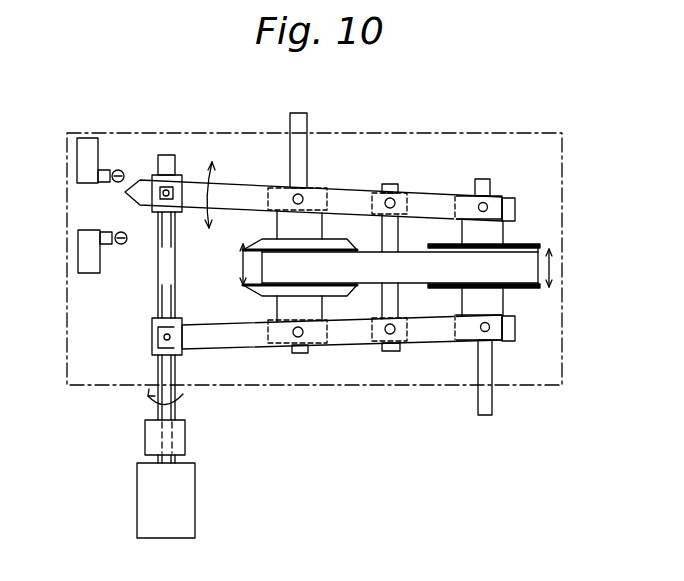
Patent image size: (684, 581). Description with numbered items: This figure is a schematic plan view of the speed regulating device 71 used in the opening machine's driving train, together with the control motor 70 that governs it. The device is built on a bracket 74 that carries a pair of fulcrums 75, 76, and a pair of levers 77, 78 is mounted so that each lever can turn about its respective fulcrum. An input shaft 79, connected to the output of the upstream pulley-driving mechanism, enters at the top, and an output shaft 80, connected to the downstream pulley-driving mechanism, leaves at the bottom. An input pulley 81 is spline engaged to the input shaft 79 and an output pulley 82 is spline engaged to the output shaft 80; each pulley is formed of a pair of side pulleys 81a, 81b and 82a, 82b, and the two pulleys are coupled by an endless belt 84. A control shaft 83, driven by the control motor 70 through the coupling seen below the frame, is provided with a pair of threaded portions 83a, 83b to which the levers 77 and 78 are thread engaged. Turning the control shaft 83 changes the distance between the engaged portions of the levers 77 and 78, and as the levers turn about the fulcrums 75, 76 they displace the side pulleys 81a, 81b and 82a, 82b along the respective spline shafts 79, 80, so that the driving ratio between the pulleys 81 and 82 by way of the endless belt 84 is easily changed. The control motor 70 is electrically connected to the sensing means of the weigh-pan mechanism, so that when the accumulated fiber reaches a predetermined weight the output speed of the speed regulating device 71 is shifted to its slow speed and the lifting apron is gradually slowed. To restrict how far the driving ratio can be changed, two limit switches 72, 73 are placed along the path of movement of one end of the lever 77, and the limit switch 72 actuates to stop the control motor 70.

The control motor 70 is at (176, 499).
The speed regulating device 71 is at (437, 157).
The limit switch 72 is at (88, 168).
The limit switch 73 is at (88, 262).
The bracket 74 is at (398, 231).
The fulcrum 75 is at (396, 199).
The fulcrum 76 is at (394, 332).
The lever 77 is at (246, 194).
The lever 78 is at (235, 337).
The input shaft 79 is at (300, 160).
The output shaft 80 is at (478, 405).
The input pulley 81 is at (274, 269).
The side pulley 81a is at (272, 242).
The side pulley 81b is at (274, 304).
The output pulley 82 is at (540, 241).
The side pulley 82a is at (520, 243).
The side pulley 82b is at (525, 292).
The control shaft 83 is at (160, 272).
The threaded portion 83a is at (158, 190).
The threaded portion 83b is at (163, 338).
The endless belt 84 is at (407, 273).